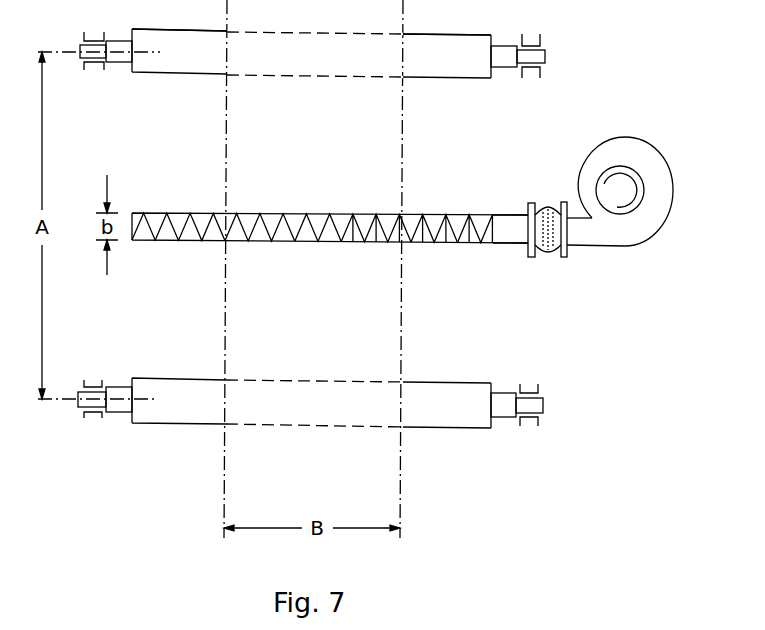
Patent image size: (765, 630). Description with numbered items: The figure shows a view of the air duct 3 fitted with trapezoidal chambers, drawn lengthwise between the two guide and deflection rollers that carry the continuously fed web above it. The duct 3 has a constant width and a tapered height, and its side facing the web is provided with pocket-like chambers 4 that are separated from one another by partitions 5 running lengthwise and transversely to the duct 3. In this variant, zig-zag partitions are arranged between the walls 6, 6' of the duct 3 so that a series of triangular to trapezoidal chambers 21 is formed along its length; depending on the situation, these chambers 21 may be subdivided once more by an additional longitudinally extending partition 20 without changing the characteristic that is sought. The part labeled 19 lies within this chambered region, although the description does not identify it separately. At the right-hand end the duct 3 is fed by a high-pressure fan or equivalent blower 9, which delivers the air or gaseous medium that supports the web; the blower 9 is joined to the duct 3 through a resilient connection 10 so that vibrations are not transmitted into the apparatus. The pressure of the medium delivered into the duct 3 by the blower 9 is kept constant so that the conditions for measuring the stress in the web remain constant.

The air duct 3 is at (513, 221).
The pocket-like chambers 4 is at (470, 221).
The partition 5 is at (433, 221).
The wall of the duct 6 is at (330, 212).
The wall of the duct 6' is at (260, 245).
The blower 9 is at (620, 248).
The resilient connection 10 is at (545, 252).
The screw thread section 19 is at (313, 242).
The additional longitudinally extending partition 20 is at (417, 244).
The triangular to trapezoidal chambers 21 is at (211, 241).